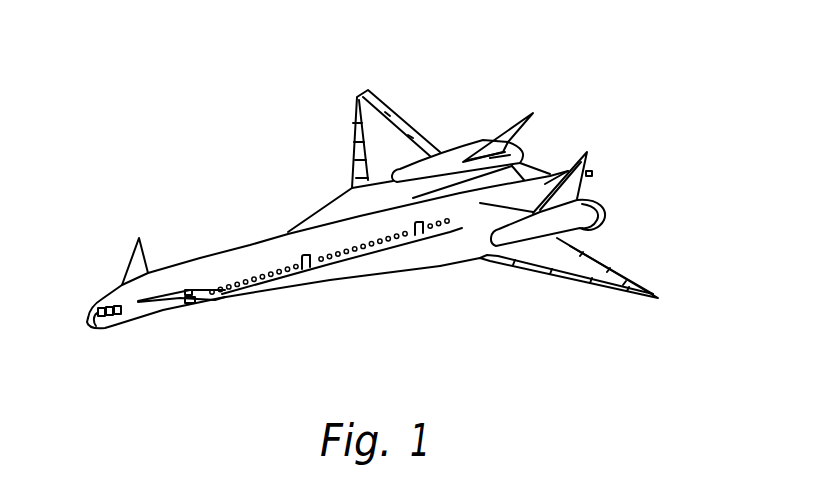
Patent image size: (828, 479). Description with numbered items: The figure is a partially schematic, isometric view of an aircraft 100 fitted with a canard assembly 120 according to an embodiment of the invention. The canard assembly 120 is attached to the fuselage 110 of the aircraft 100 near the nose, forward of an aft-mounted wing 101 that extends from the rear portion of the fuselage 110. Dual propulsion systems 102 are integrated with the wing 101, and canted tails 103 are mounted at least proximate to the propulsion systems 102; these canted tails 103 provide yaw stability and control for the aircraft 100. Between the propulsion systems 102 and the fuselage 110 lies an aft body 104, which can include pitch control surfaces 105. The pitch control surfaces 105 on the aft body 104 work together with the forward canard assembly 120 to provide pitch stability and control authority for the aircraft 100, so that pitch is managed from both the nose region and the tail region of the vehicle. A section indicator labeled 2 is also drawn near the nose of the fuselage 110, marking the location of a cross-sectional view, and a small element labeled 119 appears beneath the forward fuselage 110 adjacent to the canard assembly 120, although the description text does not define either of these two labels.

The section line 2 is at (122, 219).
The aircraft 100 is at (333, 297).
The wing 101 is at (469, 264).
The propulsion systems 102 is at (464, 132).
The canted tails 103 is at (524, 118).
The aft body 104 is at (558, 147).
The pitch control surfaces 105 is at (558, 167).
The fuselage 110 is at (212, 255).
The canard 119 is at (180, 302).
The canard assembly 120 is at (156, 235).